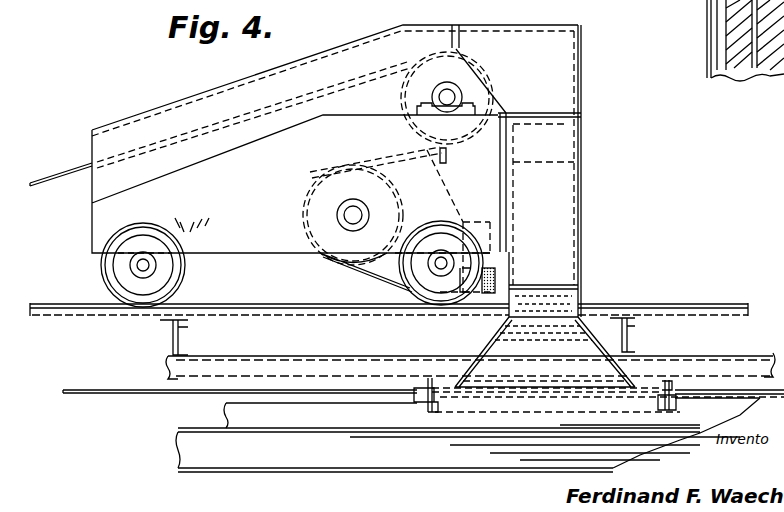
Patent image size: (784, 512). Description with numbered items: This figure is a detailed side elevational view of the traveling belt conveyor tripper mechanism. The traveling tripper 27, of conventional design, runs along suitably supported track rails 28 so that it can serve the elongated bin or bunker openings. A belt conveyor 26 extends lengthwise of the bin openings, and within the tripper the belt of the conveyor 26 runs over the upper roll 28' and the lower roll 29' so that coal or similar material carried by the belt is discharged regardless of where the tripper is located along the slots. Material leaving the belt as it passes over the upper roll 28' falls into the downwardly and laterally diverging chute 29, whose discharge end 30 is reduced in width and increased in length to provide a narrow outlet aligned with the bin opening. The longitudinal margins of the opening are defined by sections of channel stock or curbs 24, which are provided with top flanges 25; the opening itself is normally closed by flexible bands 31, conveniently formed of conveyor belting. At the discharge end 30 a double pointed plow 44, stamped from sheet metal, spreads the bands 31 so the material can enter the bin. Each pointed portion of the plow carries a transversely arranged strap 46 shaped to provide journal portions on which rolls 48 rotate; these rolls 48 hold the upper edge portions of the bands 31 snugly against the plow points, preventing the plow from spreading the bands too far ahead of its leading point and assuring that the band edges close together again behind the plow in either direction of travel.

The channel stock or curb 24 is at (250, 473).
The top flange 25 is at (306, 432).
The belt conveyor 26 is at (64, 176).
The traveling tripper 27 is at (322, 48).
The track rail 28 is at (139, 262).
The upper roll 28' is at (422, 98).
The chute 29 is at (560, 171).
The roll 29' is at (396, 219).
The discharge end 30 is at (492, 341).
The band 31 is at (228, 408).
The double pointed plow 44 is at (574, 381).
The strap 46 is at (430, 383).
The roll 48 is at (418, 406).